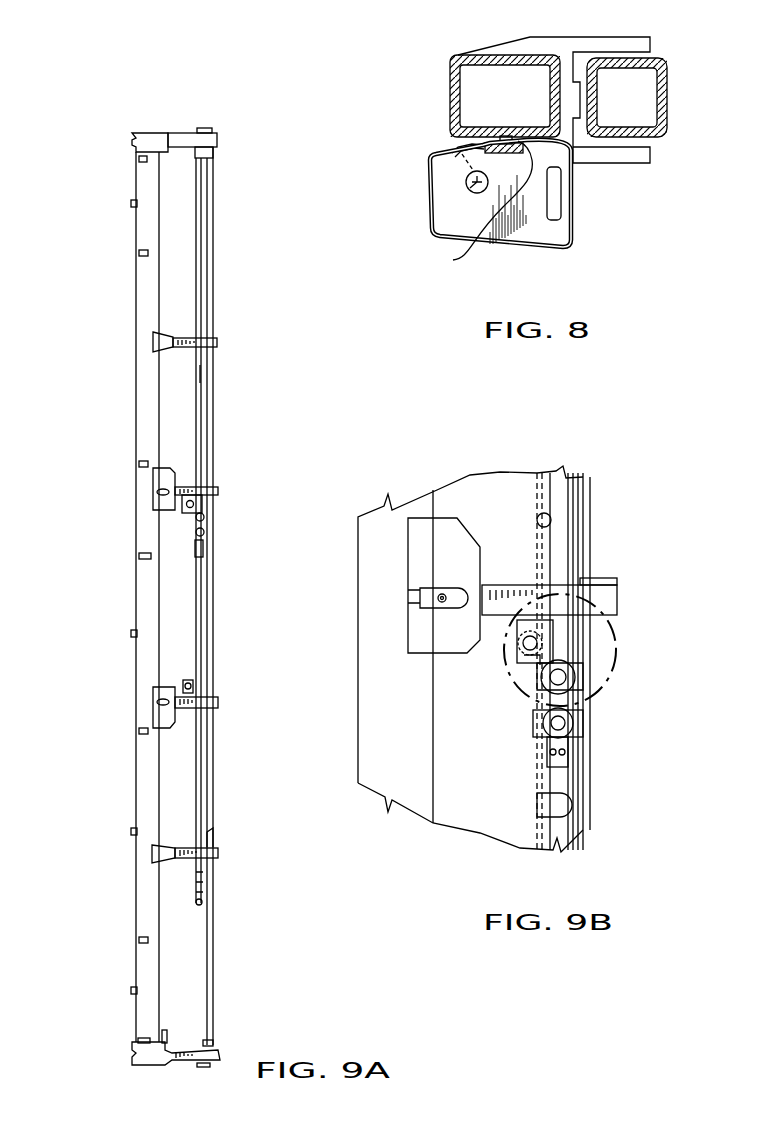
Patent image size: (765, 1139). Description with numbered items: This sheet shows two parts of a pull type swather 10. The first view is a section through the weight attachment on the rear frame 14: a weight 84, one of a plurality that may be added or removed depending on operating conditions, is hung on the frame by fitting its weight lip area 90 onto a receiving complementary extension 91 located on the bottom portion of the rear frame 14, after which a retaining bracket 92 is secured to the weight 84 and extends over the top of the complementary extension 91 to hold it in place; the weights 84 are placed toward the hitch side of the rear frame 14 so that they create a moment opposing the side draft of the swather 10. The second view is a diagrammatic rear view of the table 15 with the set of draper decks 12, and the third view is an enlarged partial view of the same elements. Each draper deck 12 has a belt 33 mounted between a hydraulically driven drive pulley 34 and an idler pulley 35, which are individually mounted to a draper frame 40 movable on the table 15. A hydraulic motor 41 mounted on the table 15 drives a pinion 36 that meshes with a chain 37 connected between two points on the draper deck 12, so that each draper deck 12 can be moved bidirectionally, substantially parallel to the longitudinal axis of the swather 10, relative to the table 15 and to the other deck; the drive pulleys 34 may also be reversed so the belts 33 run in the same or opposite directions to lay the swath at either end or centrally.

In FIG. 9B, the pull type swather 10 is at (617, 673).
In FIG. 9A, the draper decks 12 is at (88, 480).
In FIG. 8, the rear frame 14 is at (520, 63).
In FIG. 9A, the table 15 is at (212, 962).
In FIG. 9A, the belt 33 is at (205, 282).
In FIG. 9B, the belt 33 is at (545, 520).
In FIG. 9A, the drive pulley 34 is at (196, 532).
In FIG. 9B, the drive pulley 34 is at (567, 687).
In FIG. 9A, the idler pulley 35 is at (210, 150).
In FIG. 9A, the pinion 36 is at (193, 487).
In FIG. 9B, the pinion 36 is at (517, 650).
In FIG. 9A, the chain 37 is at (200, 381).
In FIG. 9B, the chain 37 is at (532, 667).
In FIG. 9A, the draper frame 40 is at (210, 308).
In FIG. 9A, the hydraulic motor 41 is at (196, 517).
In FIG. 9B, the hydraulic motor 41 is at (520, 617).
In FIG. 8, the weight 84 is at (573, 188).
In FIG. 8, the weight lip area 90 is at (497, 205).
In FIG. 8, the complementary extension 91 is at (483, 136).
In FIG. 8, the retaining bracket 92 is at (452, 151).